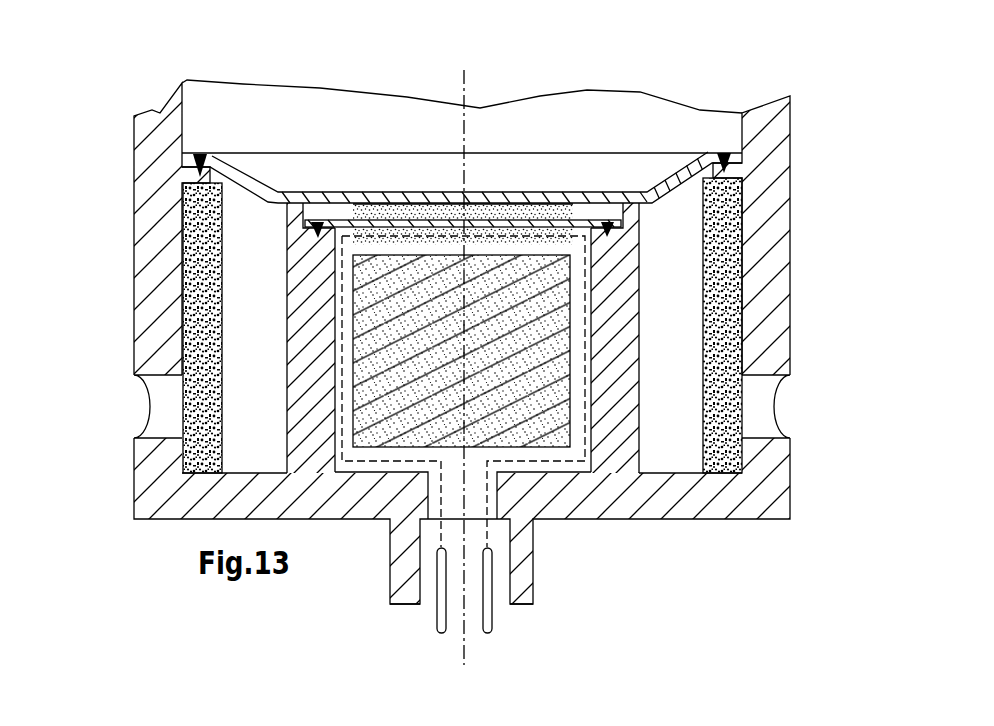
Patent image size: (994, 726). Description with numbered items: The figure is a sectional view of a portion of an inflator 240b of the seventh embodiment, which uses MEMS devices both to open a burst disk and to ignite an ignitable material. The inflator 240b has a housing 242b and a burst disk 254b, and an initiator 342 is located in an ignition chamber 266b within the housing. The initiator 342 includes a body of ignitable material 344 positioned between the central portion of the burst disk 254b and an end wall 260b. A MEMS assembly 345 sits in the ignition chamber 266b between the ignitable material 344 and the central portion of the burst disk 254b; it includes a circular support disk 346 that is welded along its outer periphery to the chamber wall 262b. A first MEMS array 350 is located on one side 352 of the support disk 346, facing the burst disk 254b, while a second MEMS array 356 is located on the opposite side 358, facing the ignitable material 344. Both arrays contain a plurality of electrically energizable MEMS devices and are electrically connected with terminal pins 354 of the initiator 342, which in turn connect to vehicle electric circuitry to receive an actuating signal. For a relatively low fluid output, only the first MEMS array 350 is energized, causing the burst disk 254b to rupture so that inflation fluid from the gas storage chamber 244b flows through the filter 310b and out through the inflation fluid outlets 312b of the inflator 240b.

The inflator 240b is at (139, 539).
The housing 242b is at (129, 494).
The gas storage chamber 244b is at (602, 117).
The burst disk 254b is at (255, 160).
The end wall 260b is at (624, 505).
The chamber wall 262b is at (297, 246).
The ignition chamber 266b is at (328, 318).
The filter 310b is at (735, 249).
The inflation fluid outlets 312b is at (162, 409).
The initiator 342 is at (582, 272).
The body of ignitable material 344 is at (515, 382).
The MEMS assembly 345 is at (527, 192).
The support disk 346 is at (403, 230).
The first MEMS array 350 is at (364, 205).
The one side of the support disk 352 is at (585, 228).
The terminal pins 354 is at (484, 588).
The second MEMS array 356 is at (437, 232).
The opposite side of the support disk 358 is at (609, 240).